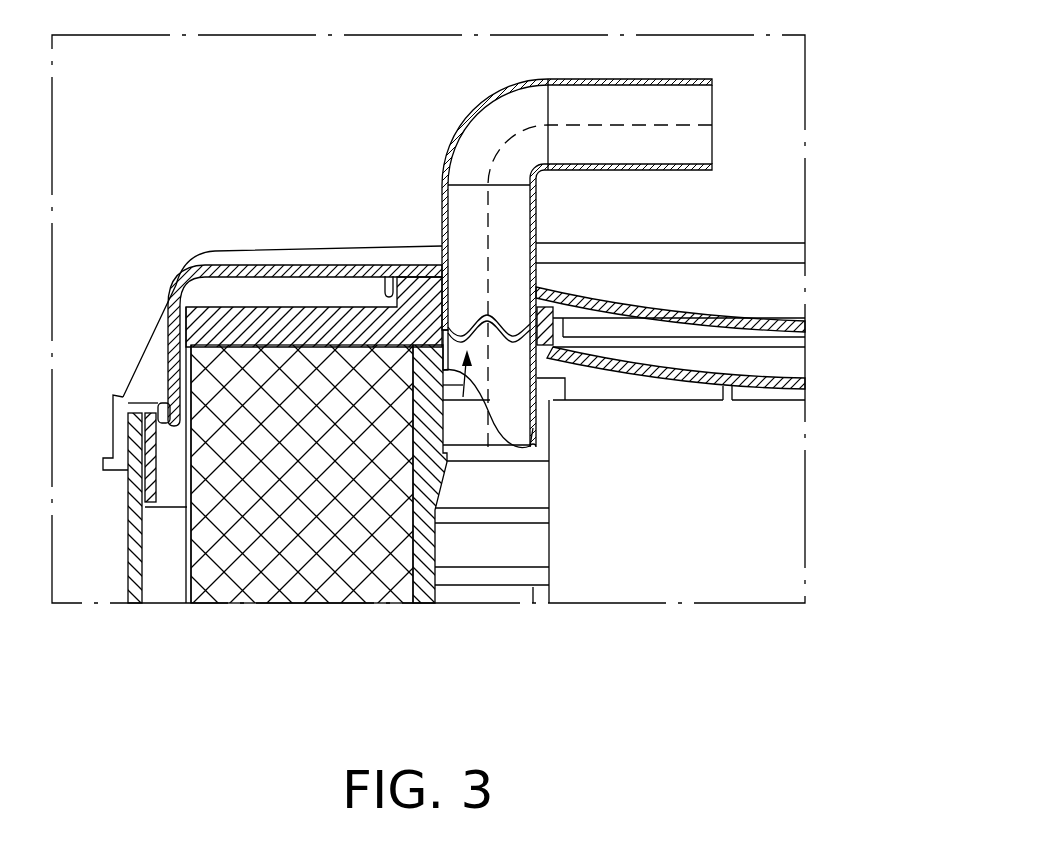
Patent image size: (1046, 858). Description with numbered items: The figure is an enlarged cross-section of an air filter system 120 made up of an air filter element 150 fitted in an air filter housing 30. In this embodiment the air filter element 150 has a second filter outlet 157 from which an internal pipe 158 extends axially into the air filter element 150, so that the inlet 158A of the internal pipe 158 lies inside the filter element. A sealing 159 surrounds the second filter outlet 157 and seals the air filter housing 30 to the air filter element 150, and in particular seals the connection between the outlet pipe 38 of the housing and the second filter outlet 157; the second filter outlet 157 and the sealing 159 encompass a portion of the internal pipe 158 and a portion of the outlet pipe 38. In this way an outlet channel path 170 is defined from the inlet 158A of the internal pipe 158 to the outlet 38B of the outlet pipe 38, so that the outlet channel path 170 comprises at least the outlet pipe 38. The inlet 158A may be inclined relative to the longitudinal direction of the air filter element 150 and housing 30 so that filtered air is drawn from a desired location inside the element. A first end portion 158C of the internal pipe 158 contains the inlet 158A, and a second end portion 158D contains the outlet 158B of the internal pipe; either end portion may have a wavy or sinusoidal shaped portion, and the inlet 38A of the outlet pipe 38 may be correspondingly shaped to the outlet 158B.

The air filter housing 30 is at (122, 631).
The outlet pipe 38 is at (468, 110).
The inlet of the outlet pipe 38A is at (466, 293).
The outlet of the outlet pipe 38B is at (745, 126).
The air filter system 120 is at (243, 172).
The air filter element 150 is at (230, 631).
The second filter outlet 157 is at (505, 315).
The internal pipe 158 is at (542, 468).
The inlet of the internal pipe 158A is at (474, 438).
The outlet of the internal pipe 158B is at (445, 370).
The first end portion 158C is at (511, 439).
The second end portion 158D is at (535, 350).
The sealing 159 is at (413, 265).
The outlet channel path 170 is at (498, 150).